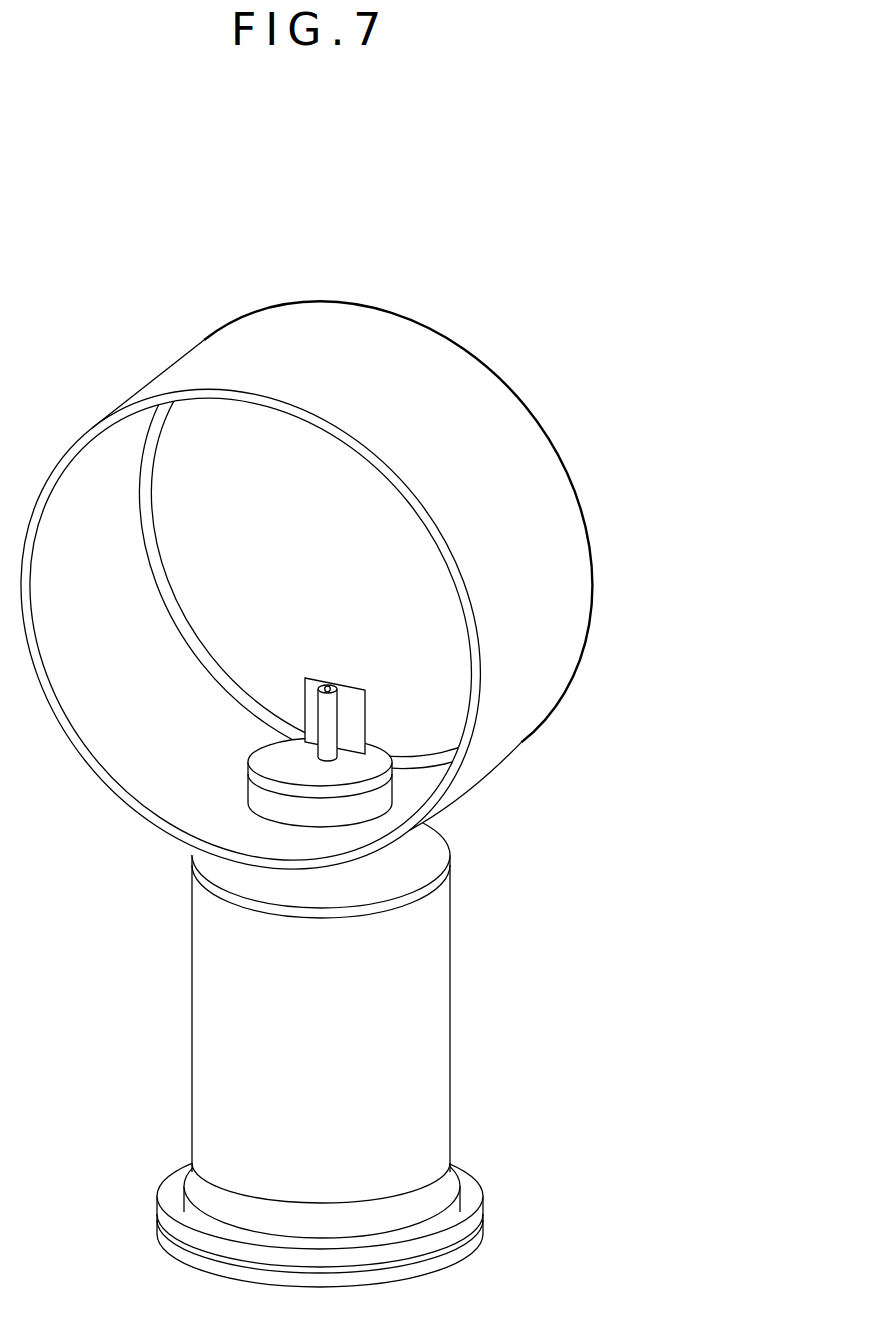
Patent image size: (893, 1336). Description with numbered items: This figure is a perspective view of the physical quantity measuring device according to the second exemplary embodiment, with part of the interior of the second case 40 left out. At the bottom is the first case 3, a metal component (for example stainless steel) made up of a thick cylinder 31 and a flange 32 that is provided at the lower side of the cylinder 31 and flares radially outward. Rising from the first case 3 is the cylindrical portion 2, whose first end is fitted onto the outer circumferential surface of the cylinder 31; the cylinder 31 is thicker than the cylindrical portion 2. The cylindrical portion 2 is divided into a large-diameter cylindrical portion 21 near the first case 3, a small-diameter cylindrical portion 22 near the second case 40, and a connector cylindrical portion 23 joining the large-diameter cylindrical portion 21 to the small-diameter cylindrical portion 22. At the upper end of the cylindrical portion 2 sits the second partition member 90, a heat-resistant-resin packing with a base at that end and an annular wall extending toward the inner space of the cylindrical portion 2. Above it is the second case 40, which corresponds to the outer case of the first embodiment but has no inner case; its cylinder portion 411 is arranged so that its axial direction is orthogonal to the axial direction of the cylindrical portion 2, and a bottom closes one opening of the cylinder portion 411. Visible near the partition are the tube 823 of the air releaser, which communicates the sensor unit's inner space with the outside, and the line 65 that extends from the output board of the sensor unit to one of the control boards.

The cylindrical portion 2 is at (369, 1002).
The first case 3 is at (331, 1211).
The large-diameter cylindrical portion 21 is at (430, 1072).
The small-diameter cylindrical portion 22 is at (240, 747).
The connector cylindrical portion 23 is at (427, 853).
The cylinder 31 is at (200, 1184).
The flange 32 is at (192, 1224).
The second case 40 is at (344, 585).
The cylinder portion 411 is at (433, 352).
The line 65 is at (353, 703).
The second partition member 90 is at (268, 752).
The tube 823 is at (311, 700).